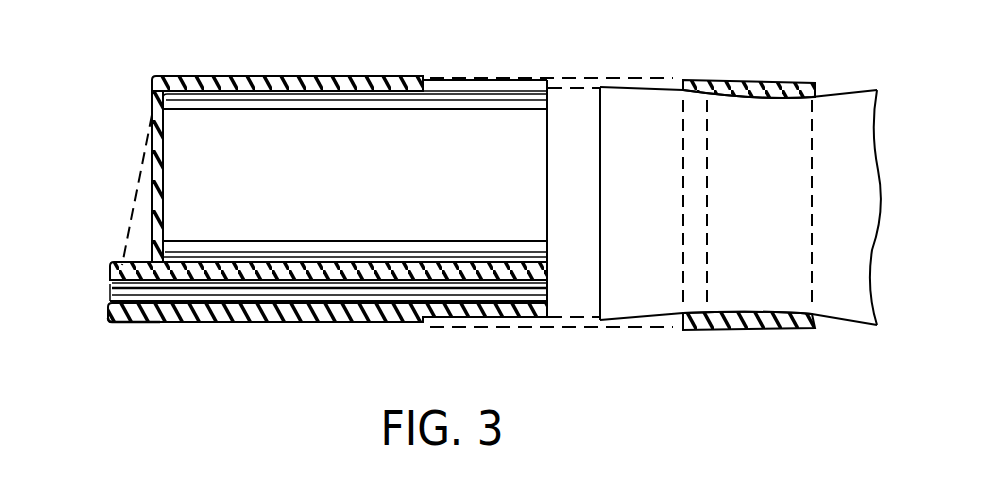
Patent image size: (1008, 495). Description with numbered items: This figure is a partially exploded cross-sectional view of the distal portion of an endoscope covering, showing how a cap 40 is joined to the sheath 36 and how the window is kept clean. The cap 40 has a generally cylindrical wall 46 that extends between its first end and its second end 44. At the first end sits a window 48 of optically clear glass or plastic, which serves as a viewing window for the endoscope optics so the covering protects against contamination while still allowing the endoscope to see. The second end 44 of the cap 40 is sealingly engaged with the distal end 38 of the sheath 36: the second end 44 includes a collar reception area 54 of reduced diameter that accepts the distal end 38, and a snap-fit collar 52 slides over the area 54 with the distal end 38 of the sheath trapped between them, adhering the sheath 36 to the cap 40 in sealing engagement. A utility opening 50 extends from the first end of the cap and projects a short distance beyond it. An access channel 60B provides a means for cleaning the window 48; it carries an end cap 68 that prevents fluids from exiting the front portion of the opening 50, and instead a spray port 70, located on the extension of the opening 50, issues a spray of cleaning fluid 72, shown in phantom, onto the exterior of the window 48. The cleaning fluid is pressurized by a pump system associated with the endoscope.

The sheath 36 is at (847, 326).
The distal end of the sheath 38 is at (640, 326).
The cap 40 is at (308, 76).
The second end of the cap 44 is at (557, 80).
The generally cylindrical wall 46 is at (310, 325).
The window 48 is at (150, 138).
The utility opening 50 is at (130, 325).
The snap-fit collar 52 is at (765, 80).
The collar reception area 54 is at (473, 79).
The access channel 60B is at (106, 293).
The end cap 68 is at (105, 287).
The spray port 70 is at (120, 262).
The spray of cleaning fluid 72 is at (140, 198).